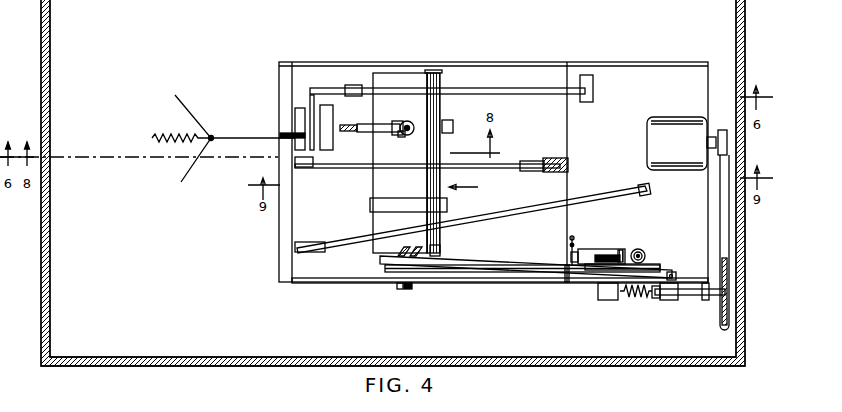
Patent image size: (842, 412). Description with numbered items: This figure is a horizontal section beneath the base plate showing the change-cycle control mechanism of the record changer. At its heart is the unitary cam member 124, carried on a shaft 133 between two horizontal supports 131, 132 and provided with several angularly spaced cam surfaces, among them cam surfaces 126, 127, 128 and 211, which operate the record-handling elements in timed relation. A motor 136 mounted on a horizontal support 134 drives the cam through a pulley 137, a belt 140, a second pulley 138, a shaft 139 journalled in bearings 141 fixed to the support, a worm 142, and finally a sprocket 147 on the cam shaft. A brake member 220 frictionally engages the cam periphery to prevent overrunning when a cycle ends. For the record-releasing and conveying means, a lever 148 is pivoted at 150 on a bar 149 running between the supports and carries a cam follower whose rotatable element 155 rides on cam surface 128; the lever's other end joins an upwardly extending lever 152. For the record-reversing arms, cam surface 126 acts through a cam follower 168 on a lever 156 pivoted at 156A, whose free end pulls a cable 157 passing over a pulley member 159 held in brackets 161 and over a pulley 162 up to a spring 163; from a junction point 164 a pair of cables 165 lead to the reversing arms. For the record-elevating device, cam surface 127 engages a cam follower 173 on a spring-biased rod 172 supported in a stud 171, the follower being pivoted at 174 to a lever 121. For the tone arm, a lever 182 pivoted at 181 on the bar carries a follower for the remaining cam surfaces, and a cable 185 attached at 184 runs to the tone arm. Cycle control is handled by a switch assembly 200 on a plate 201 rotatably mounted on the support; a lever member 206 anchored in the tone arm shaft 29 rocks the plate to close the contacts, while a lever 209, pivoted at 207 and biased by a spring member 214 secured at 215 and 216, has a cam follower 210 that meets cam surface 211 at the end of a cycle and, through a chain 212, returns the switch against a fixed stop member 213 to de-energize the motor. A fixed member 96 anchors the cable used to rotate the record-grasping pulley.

The horizontal support 134 is at (628, 61).
The bar 149 is at (279, 68).
The horizontal support 132 is at (355, 62).
The cam surface 126 is at (352, 86).
The lever 156 is at (515, 88).
The pivot 156A is at (585, 75).
The rotatable element 155 is at (410, 169).
The cam follower 168 is at (433, 78).
The brake member 220 is at (370, 208).
The lever 148 is at (512, 164).
The upwardly extending lever 152 is at (548, 158).
The cam surface 128 is at (522, 160).
The cam surface 127 is at (452, 121).
The spring-biased rod 172 is at (413, 133).
The stud 171 is at (384, 102).
The cam follower 173 is at (393, 124).
The pivotal connection 174 is at (400, 134).
The lever 121 is at (350, 132).
The brackets 161 is at (324, 105).
The pulley member 159 is at (310, 100).
The pulley 162 is at (295, 134).
The cable 157 is at (268, 139).
The junction point 164 is at (214, 140).
The spring 163 is at (160, 131).
The cables 165 is at (203, 128).
The pivot 150 is at (305, 168).
The unitary cam member 124 is at (475, 183).
The lever 182 is at (565, 206).
The cable 185 is at (640, 212).
The cable attachment point 184 is at (638, 189).
The pivot 181 is at (319, 243).
The cam follower 210 is at (396, 248).
The cam surface 211 is at (440, 250).
The lever 209 is at (482, 262).
The pivot 207 is at (675, 273).
The fixed stop member 213 is at (570, 242).
The spring anchorage 216 is at (574, 238).
The spring member 214 is at (571, 257).
The switch assembly 200 is at (601, 249).
The plate 201 is at (622, 256).
The tone arm shaft 29 is at (645, 253).
The spring attachment point 215 is at (567, 270).
The chain 212 is at (612, 268).
The sprocket 147 is at (452, 273).
The horizontal support 131 is at (348, 284).
The fixed member 96 is at (399, 290).
The shaft 133 is at (411, 290).
The bearings 141 is at (608, 300).
The worm 142 is at (647, 300).
The lever member 206 is at (652, 297).
The shaft 139 is at (692, 296).
The motor 136 is at (680, 125).
The pulley 137 is at (724, 130).
The belt 140 is at (729, 232).
The pulley 138 is at (729, 278).